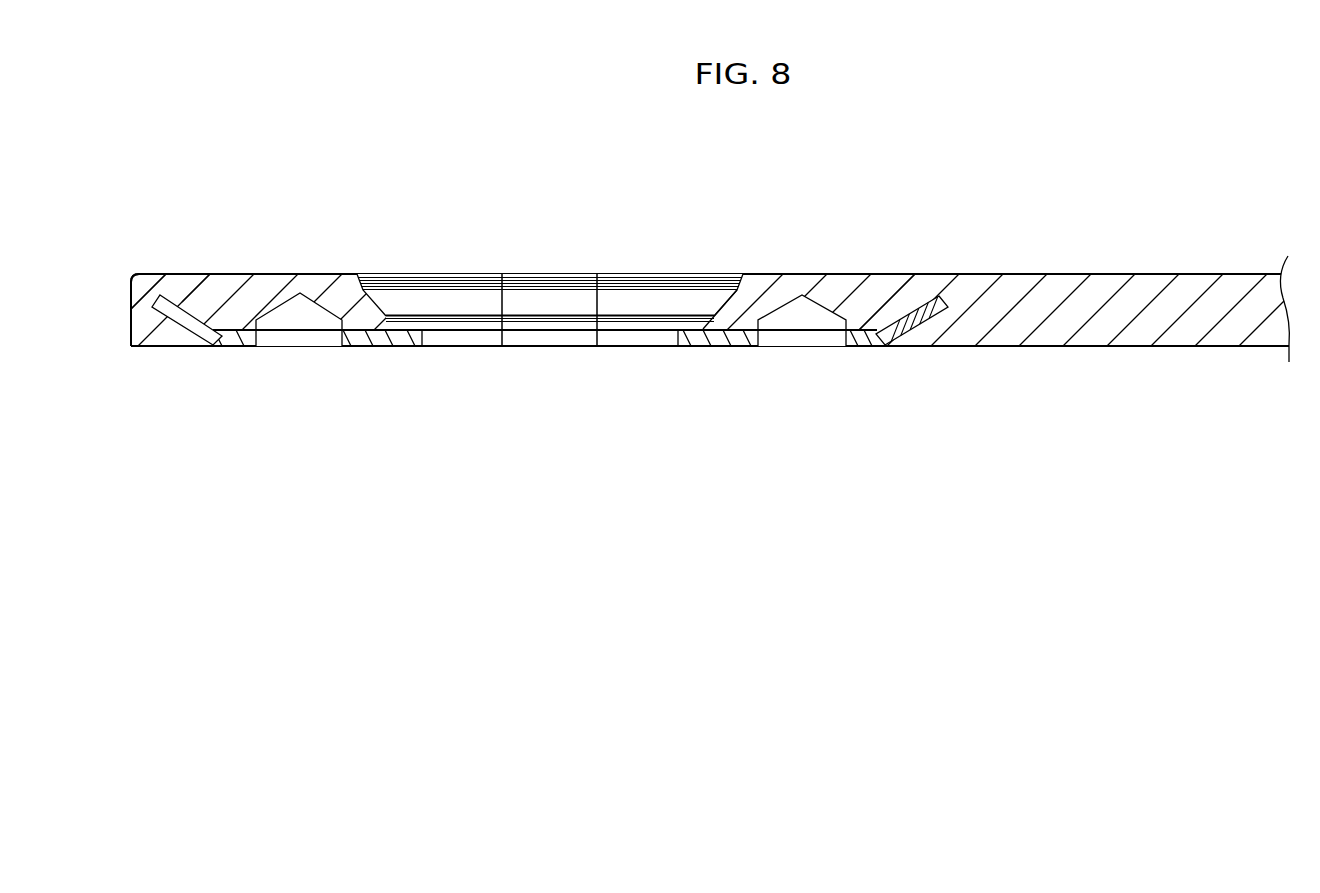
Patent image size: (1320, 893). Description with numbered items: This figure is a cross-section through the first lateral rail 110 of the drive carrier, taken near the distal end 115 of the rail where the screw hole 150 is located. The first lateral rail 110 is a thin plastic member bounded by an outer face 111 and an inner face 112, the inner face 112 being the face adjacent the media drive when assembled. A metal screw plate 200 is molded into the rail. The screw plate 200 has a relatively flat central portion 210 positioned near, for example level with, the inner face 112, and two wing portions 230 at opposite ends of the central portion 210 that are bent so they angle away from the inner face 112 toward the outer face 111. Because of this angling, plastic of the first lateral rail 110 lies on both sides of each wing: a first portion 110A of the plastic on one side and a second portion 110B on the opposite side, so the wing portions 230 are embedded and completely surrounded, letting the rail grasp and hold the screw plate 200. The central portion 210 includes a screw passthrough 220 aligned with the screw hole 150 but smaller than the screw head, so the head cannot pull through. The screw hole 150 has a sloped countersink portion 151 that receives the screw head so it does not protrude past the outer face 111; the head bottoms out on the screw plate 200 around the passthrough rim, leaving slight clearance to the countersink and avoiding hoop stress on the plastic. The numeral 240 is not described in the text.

The first lateral rail 110 is at (1111, 280).
The first portion of the plastic 110A is at (168, 332).
The second portion of the plastic 110B is at (210, 302).
The outer face 111 is at (1052, 272).
The inner face 112 is at (1091, 348).
The distal end 115 is at (147, 238).
The screw hole 150 is at (557, 275).
The sloped countersink portion 151 is at (390, 308).
The screw plate 200 is at (731, 348).
The central portion 210 is at (386, 340).
The screw passthrough 220 is at (466, 338).
The wing portions 230 is at (190, 330).
The conductive bump 240 is at (300, 338).